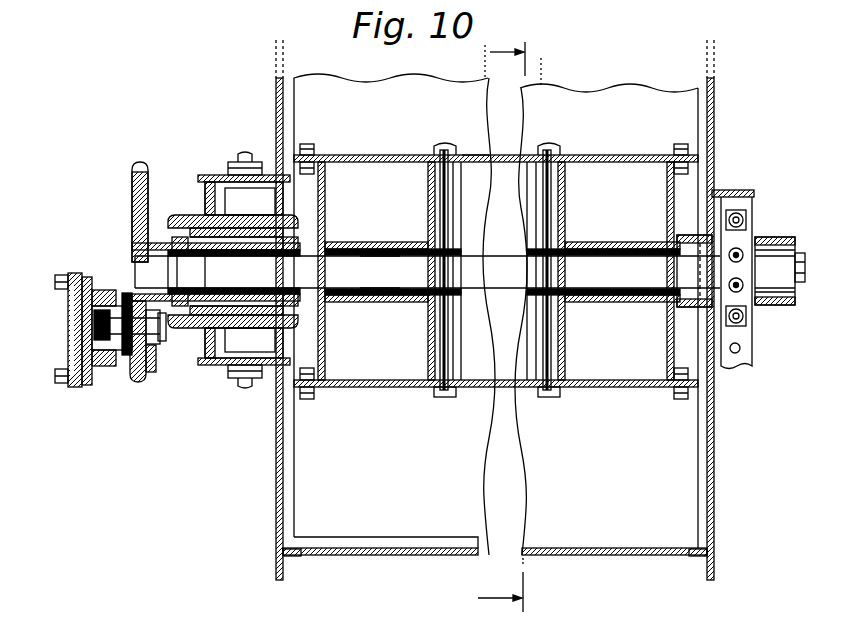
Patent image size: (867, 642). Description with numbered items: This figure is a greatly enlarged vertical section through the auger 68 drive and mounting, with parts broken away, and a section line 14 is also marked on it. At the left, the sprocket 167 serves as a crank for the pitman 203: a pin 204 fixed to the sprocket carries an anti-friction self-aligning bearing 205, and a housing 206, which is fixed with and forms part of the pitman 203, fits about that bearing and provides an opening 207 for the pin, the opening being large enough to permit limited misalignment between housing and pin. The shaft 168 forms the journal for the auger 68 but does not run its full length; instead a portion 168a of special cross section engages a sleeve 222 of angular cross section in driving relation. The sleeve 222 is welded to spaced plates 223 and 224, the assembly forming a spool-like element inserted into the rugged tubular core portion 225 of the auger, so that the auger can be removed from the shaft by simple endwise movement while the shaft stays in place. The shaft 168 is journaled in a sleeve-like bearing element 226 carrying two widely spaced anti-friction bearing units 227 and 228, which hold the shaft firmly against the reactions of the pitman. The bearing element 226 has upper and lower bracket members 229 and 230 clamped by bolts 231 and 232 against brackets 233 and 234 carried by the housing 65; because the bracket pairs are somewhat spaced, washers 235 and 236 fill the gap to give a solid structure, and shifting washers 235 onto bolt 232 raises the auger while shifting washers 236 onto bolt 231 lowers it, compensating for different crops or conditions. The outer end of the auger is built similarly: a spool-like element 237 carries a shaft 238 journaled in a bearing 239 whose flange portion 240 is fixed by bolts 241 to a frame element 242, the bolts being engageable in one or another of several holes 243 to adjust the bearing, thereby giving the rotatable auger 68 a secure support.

The section line 14- 14 is at (518, 327).
The housing 65 is at (278, 489).
The auger 68 is at (495, 314).
The sprocket 167 is at (140, 163).
The shaft 168 is at (135, 262).
The portion of shaft 168a is at (383, 268).
The pitman 203 is at (68, 326).
The pin 204 is at (153, 350).
The bearing 205 is at (76, 348).
The housing 206 is at (119, 353).
The opening 207 is at (131, 366).
The sleeve 222 is at (398, 243).
The plate 223 is at (327, 367).
The plate 224 is at (432, 346).
The tubular core portion 225 is at (485, 156).
The bearing element 226 is at (190, 217).
The anti-friction bearing unit 227 is at (190, 236).
The anti-friction bearing unit 228 is at (281, 243).
The upper bracket member 229 is at (321, 162).
The lower bracket member 230 is at (280, 346).
The bolt 231 is at (262, 116).
The bolt 232 is at (240, 378).
The bracket 233 is at (224, 178).
The bracket 234 is at (262, 372).
The washer 235 is at (262, 200).
The washer 236 is at (228, 364).
The spool-like element 237 is at (575, 186).
The shaft 238 is at (800, 254).
The bearing 239 is at (778, 277).
The flange portion 240 is at (752, 208).
The bolt 241 is at (748, 327).
The frame element 242 is at (742, 191).
The hole 243 is at (740, 350).